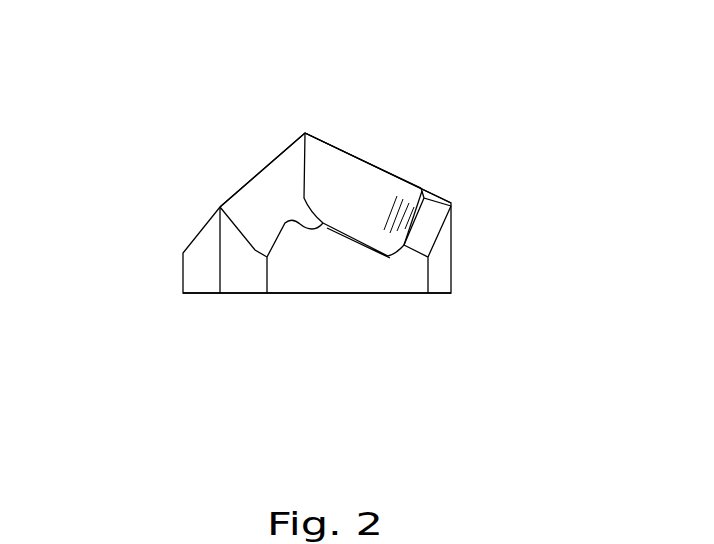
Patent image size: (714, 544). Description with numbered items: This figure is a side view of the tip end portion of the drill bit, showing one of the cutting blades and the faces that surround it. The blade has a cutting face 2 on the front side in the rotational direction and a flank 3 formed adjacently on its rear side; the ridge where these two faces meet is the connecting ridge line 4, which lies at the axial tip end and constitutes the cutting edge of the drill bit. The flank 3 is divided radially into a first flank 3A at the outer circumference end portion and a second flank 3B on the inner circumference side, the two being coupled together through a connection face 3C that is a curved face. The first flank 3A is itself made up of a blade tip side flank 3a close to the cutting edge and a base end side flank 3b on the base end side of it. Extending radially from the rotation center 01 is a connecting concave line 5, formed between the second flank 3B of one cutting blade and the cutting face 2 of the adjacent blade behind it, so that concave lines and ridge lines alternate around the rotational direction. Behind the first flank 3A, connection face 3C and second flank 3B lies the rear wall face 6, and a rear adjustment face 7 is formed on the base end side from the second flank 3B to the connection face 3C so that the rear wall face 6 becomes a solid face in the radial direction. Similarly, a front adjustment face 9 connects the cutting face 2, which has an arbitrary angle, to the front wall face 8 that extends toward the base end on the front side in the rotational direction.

The rotation center 01 is at (305, 133).
The cutting face 2 is at (262, 207).
The flank 3 is at (390, 183).
The first flank 3A is at (504, 229).
The blade tip side flank 3a is at (438, 200).
The base end side flank 3b is at (427, 235).
The second flank 3B is at (332, 182).
The connection face 3C is at (395, 225).
The connecting ridge line 4 is at (267, 173).
The connecting concave line 5 is at (330, 232).
The rear wall face 6 is at (378, 283).
The rear adjustment face 7 is at (352, 243).
The front wall face 8 is at (280, 283).
The front adjustment face 9 is at (293, 222).